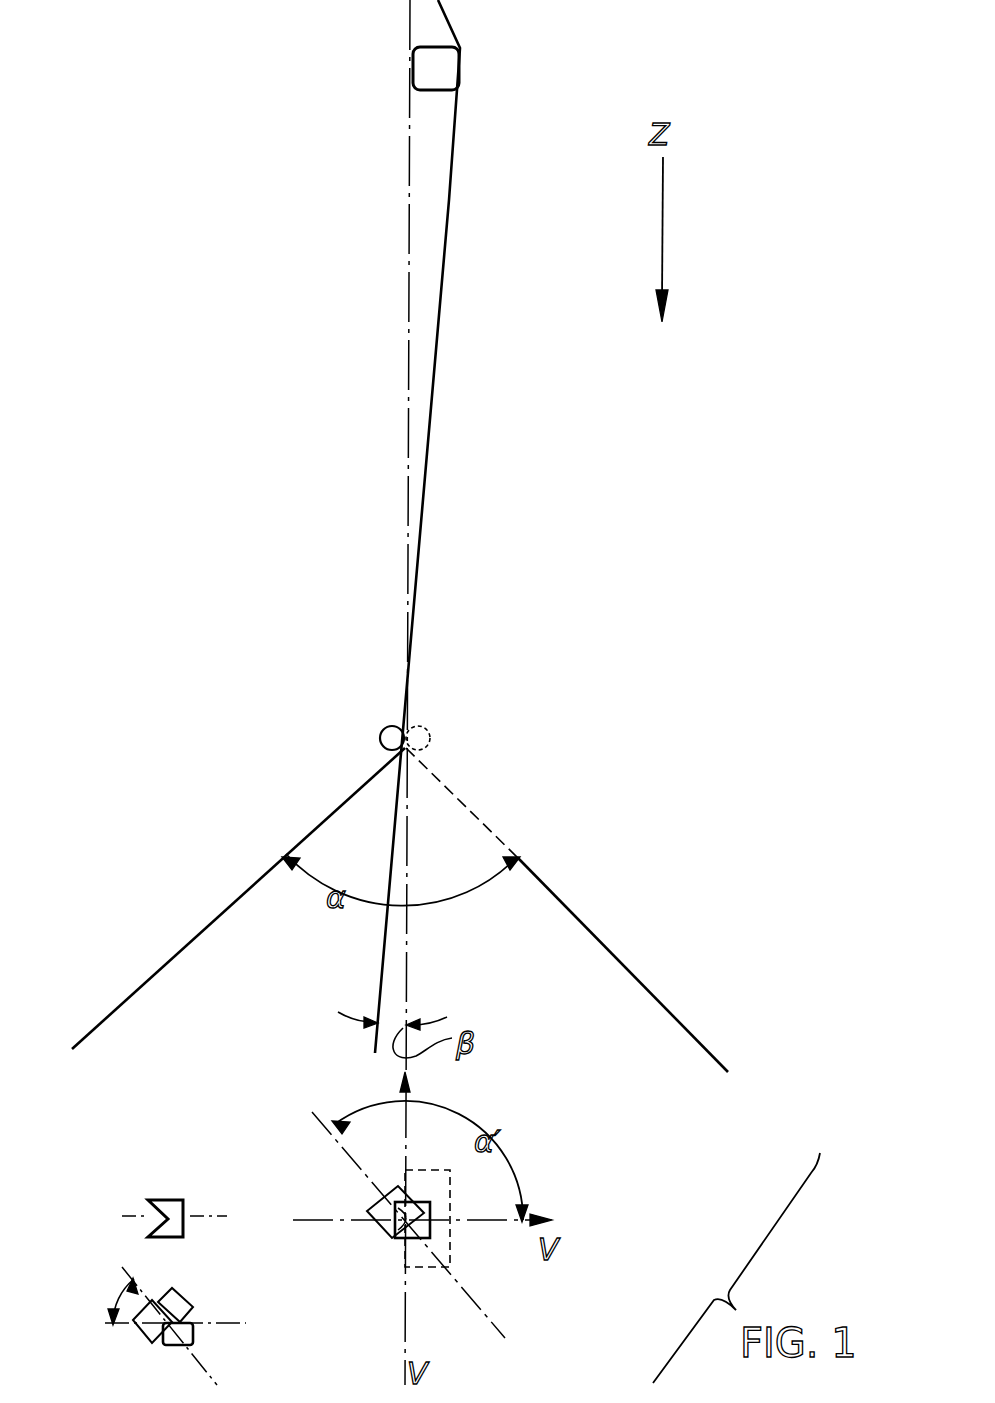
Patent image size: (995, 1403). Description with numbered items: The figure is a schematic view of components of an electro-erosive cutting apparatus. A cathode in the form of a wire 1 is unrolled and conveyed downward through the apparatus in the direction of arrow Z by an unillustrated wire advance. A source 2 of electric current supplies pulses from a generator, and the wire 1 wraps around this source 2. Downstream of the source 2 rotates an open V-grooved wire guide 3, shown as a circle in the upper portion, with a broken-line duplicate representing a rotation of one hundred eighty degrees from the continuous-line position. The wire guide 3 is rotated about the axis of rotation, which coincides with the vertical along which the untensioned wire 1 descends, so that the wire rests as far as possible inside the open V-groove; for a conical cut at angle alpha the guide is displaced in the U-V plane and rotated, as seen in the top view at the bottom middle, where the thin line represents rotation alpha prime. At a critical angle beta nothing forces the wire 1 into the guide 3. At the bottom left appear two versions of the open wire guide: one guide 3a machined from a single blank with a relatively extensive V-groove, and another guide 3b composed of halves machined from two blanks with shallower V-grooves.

The wire 1 is at (455, 168).
The source of electric current 2 is at (443, 63).
The open V-grooved wire guide 3 is at (380, 738).
The guide machined out of a single blank 3a is at (148, 1200).
The guide composed of halves 3b is at (193, 1305).